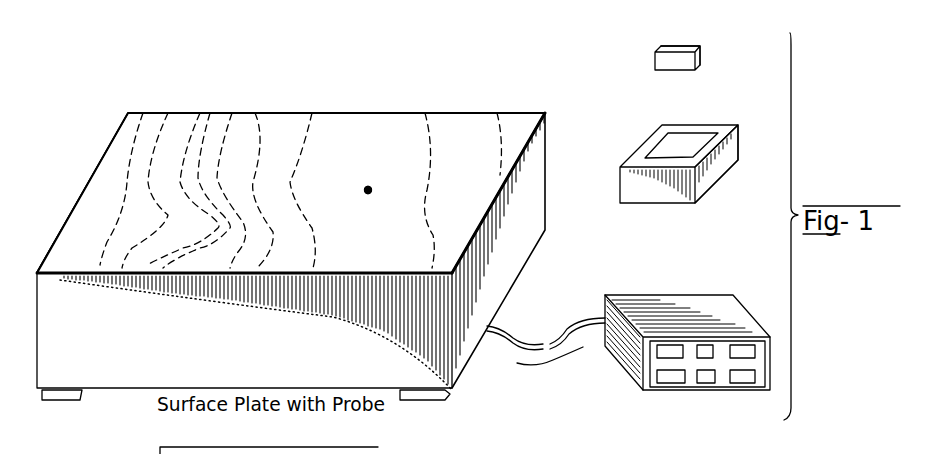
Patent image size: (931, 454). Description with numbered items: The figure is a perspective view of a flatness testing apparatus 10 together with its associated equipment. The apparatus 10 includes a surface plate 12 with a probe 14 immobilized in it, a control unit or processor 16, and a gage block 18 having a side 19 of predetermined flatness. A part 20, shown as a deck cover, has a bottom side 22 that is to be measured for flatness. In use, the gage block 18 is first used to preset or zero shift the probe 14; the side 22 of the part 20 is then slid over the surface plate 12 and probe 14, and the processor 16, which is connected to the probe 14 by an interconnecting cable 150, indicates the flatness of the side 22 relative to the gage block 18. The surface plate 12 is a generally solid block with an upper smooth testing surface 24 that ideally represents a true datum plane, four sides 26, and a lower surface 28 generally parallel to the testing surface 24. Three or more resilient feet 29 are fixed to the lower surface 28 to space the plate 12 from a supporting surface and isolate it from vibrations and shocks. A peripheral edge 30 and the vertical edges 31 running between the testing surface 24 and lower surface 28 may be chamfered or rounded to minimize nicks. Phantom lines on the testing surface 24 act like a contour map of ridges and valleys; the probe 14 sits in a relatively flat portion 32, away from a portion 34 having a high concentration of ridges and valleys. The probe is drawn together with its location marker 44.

The testing apparatus 10 is at (398, 90).
The surface plate 12 is at (185, 113).
The probe 14 is at (370, 186).
The processor 16 is at (607, 370).
The gage block 18 is at (655, 55).
The side 19 is at (683, 60).
The part 20 is at (640, 148).
The side 22 is at (718, 183).
The testing surface 24 is at (463, 140).
The sides 26 is at (128, 350).
The lower surface 28 is at (133, 390).
The feet 29 is at (62, 400).
The peripheral edge 30 is at (88, 182).
The vertical edges 31 is at (455, 310).
The portion 32 is at (388, 246).
The portion 34 is at (231, 232).
The probe tip 44 is at (366, 190).
The cable 150 is at (565, 332).